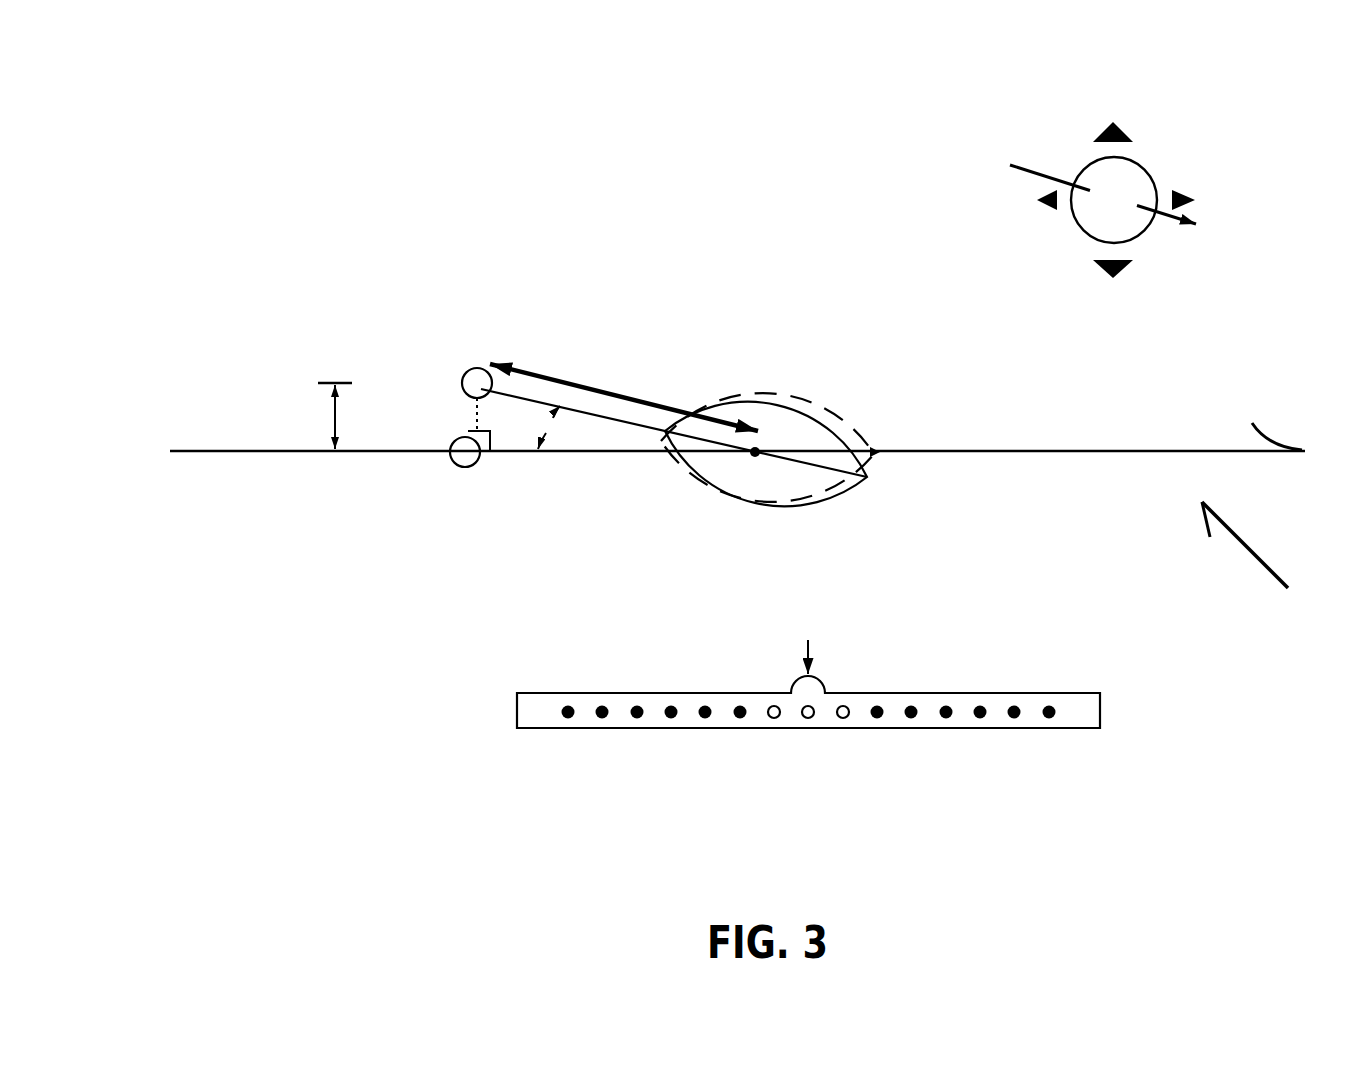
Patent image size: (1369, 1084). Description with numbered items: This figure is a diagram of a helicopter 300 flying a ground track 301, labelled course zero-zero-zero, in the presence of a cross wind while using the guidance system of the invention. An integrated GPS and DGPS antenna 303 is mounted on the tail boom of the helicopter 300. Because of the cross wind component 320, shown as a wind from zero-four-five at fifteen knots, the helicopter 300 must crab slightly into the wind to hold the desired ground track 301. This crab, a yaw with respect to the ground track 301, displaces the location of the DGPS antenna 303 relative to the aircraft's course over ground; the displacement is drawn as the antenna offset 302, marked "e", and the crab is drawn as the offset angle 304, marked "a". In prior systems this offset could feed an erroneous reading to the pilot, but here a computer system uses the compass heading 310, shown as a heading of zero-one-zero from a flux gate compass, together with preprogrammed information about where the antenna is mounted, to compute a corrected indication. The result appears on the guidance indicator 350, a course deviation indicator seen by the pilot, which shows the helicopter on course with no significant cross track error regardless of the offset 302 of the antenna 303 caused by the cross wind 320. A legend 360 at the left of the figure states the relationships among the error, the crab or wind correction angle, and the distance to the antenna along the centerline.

The helicopter 300 is at (765, 380).
The ground track 301 is at (970, 430).
The antenna offset 302 is at (300, 416).
The DGPS antenna 303 is at (452, 416).
The offset angle 304 is at (530, 512).
The compass heading 310 is at (1073, 246).
The cross wind component 320 is at (1248, 594).
The guidance indicator 350 is at (760, 681).
The legend 360 is at (111, 561).